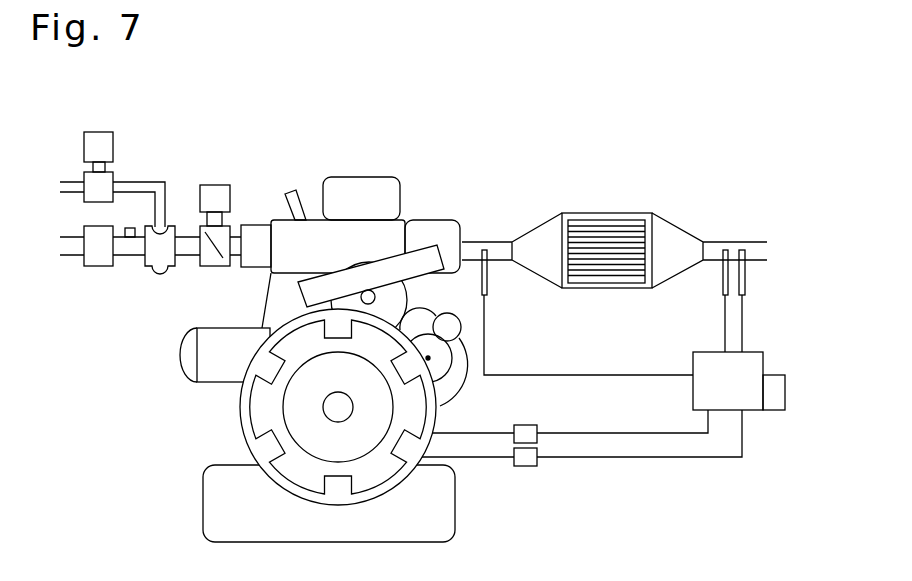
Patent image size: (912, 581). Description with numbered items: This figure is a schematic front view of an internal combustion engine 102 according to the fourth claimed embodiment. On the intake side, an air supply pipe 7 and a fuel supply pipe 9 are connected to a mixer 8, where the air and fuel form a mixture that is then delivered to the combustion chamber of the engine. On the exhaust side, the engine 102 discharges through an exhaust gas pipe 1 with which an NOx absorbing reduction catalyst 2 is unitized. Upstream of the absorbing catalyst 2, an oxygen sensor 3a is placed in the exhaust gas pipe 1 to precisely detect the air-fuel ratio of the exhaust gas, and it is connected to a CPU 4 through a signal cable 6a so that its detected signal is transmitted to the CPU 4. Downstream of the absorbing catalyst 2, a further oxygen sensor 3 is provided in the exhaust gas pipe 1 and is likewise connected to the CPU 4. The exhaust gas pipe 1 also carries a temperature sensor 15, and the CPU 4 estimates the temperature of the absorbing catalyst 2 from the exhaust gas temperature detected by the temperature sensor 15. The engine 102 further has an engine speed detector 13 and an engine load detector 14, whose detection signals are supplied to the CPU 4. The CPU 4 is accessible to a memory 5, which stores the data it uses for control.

The internal combustion engine 102 is at (238, 120).
The exhaust gas pipe 1 is at (486, 242).
The NOx absorbing reduction catalyst 2 is at (620, 230).
The oxygen sensor 3 is at (746, 283).
The oxygen sensor 3a is at (488, 282).
The CPU 4 is at (718, 397).
The memory 5 is at (773, 410).
The signal cable 6a is at (588, 375).
The air supply pipe 7 is at (130, 255).
The mixer 8 is at (158, 267).
The fuel supply pipe 9 is at (137, 182).
The engine speed detector 13 is at (525, 425).
The engine load detector 14 is at (528, 466).
The temperature sensor 15 is at (722, 283).